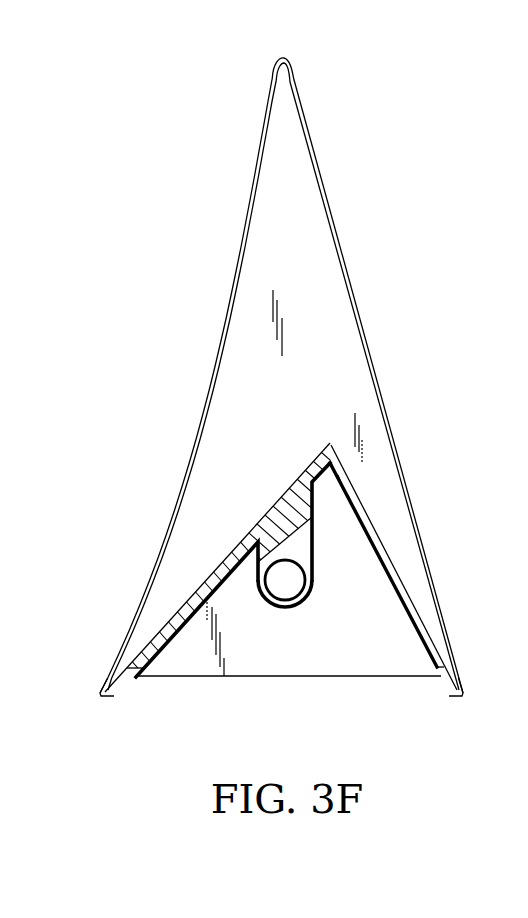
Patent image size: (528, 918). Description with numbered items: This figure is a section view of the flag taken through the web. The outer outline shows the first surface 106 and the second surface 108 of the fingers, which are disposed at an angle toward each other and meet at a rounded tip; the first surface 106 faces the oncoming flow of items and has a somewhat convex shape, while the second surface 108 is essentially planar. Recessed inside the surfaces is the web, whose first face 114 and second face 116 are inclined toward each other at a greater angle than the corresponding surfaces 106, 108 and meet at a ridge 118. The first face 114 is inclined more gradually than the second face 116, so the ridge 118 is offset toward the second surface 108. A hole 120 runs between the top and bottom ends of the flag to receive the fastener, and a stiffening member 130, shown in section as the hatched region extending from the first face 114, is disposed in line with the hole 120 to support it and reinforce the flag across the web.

The first surface 106 is at (258, 163).
The second surface 108 is at (336, 202).
The first face 114 is at (200, 593).
The second face 116 is at (392, 556).
The ridge 118 is at (332, 440).
The hole 120 is at (278, 601).
The stiffening member 130 is at (282, 523).